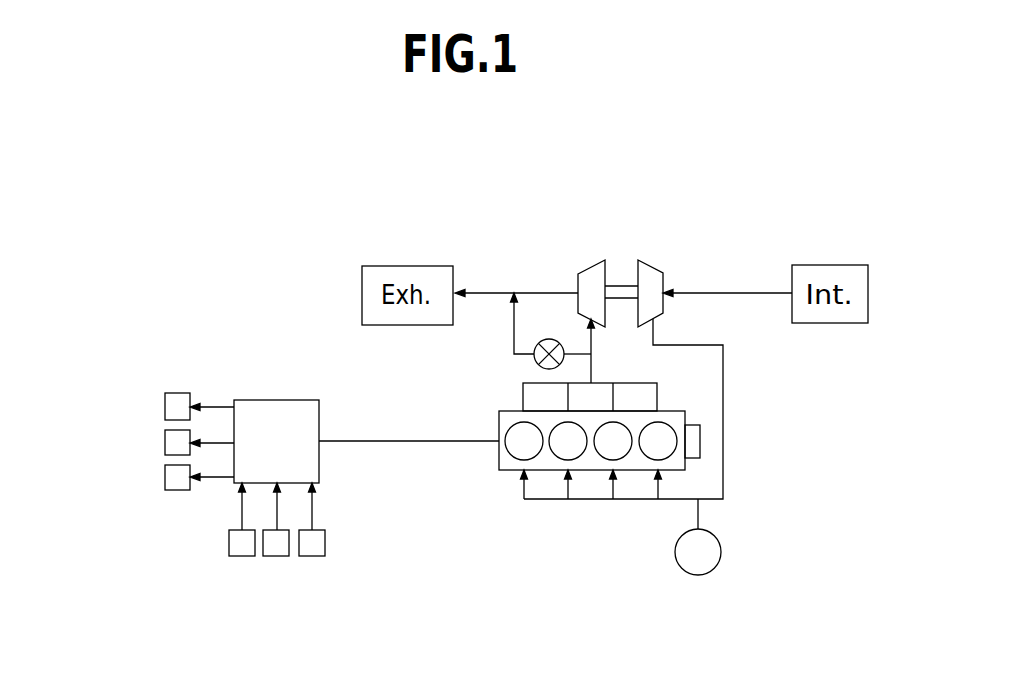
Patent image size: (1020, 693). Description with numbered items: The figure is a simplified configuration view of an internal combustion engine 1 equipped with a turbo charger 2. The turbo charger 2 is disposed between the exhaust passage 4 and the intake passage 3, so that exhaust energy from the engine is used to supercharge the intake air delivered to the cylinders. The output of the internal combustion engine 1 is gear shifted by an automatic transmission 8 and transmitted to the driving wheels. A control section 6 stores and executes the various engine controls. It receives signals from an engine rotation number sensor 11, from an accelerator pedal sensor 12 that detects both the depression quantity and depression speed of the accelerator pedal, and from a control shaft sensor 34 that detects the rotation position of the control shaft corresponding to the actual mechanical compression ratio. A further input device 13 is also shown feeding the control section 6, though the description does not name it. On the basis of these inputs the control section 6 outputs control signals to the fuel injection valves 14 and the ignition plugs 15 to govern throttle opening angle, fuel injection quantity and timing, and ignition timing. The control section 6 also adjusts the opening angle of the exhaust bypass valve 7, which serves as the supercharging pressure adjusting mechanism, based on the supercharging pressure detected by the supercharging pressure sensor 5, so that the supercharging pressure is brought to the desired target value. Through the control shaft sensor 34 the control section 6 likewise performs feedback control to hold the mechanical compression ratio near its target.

The internal combustion engine 1 is at (492, 458).
The turbo charger 2 is at (598, 258).
The intake passage 3 is at (727, 290).
The exhaust passage 4 is at (484, 290).
The supercharging pressure sensor 5 is at (698, 575).
The control section 6 is at (277, 400).
The exhaust bypass valve 7 is at (535, 363).
The automatic transmission 8 is at (700, 443).
The engine rotation number sensor 11 is at (242, 556).
The accelerator pedal sensor 12 is at (277, 556).
The actuator 13 is at (165, 478).
The fuel injection valves 14 is at (165, 443).
The ignition plugs 15 is at (165, 404).
The control shaft sensor 34 is at (311, 556).